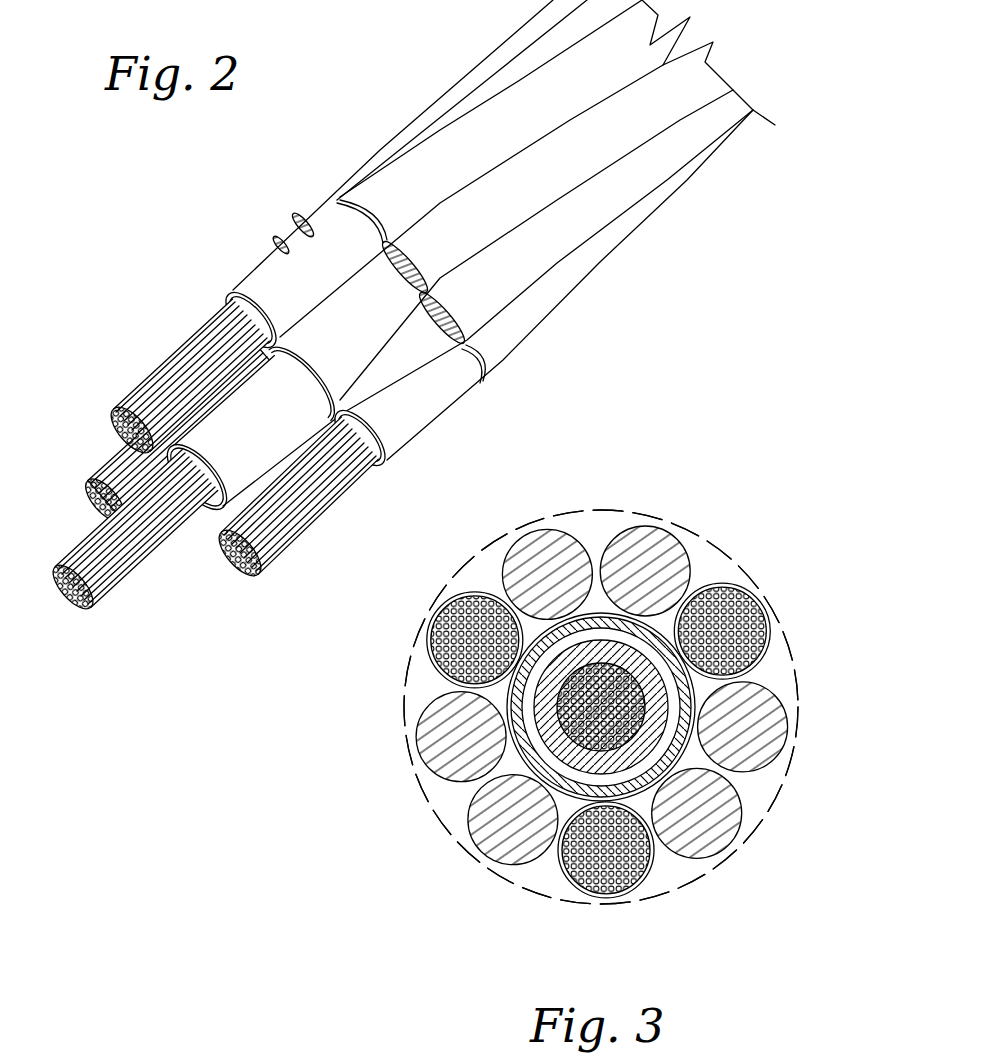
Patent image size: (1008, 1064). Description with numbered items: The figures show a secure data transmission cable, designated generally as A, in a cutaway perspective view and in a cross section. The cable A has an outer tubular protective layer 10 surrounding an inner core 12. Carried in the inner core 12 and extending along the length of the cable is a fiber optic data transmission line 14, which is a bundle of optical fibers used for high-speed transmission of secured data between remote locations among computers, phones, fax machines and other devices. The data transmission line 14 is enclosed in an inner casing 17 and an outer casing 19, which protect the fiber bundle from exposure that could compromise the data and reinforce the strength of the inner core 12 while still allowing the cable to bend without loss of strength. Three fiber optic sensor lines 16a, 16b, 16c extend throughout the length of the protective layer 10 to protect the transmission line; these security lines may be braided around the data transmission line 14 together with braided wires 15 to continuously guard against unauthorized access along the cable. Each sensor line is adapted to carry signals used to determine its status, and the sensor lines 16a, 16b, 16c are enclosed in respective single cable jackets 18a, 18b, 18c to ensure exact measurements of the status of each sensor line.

In FIG. 2, the outer tubular protective layer 10 is at (433, 70).
In FIG. 3, the outer tubular protective layer 10 is at (412, 780).
In FIG. 3, the inner core 12 is at (473, 694).
In FIG. 2, the fiber optic data transmission line 14 is at (110, 563).
In FIG. 3, the fiber optic data transmission line 14 is at (593, 655).
In FIG. 3, the braided wires 15 is at (723, 820).
In FIG. 2, the fiber optic sensor line 16a is at (297, 517).
In FIG. 3, the fiber optic sensor line 16a is at (780, 628).
In FIG. 2, the fiber optic sensor line 16b is at (173, 377).
In FIG. 3, the fiber optic sensor line 16b is at (580, 877).
In FIG. 2, the fiber optic sensor line 16c is at (123, 467).
In FIG. 3, the fiber optic sensor line 16c is at (475, 640).
In FIG. 2, the inner casing 17 is at (268, 437).
In FIG. 3, the inner casing 17 is at (582, 660).
In FIG. 2, the single cable jacket 18a is at (441, 407).
In FIG. 2, the single cable jacket 18b is at (338, 280).
In FIG. 3, the single cable jacket 18b is at (663, 887).
In FIG. 3, the single cable jacket 18c is at (737, 585).
In FIG. 2, the outer casing 19 is at (374, 339).
In FIG. 3, the outer casing 19 is at (690, 720).
In FIG. 2, the secure data transmission cable A is at (178, 312).
In FIG. 3, the secure data transmission cable A is at (765, 515).